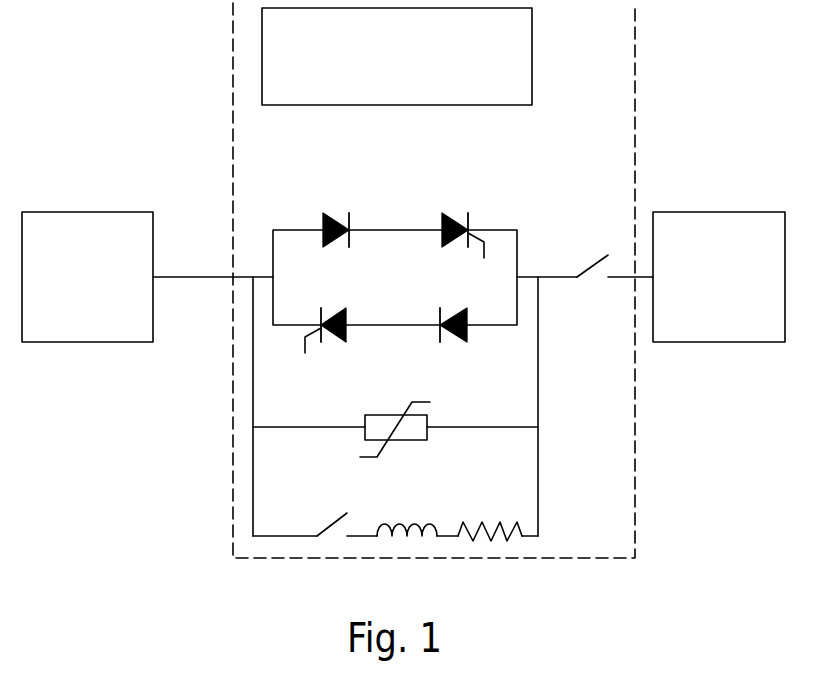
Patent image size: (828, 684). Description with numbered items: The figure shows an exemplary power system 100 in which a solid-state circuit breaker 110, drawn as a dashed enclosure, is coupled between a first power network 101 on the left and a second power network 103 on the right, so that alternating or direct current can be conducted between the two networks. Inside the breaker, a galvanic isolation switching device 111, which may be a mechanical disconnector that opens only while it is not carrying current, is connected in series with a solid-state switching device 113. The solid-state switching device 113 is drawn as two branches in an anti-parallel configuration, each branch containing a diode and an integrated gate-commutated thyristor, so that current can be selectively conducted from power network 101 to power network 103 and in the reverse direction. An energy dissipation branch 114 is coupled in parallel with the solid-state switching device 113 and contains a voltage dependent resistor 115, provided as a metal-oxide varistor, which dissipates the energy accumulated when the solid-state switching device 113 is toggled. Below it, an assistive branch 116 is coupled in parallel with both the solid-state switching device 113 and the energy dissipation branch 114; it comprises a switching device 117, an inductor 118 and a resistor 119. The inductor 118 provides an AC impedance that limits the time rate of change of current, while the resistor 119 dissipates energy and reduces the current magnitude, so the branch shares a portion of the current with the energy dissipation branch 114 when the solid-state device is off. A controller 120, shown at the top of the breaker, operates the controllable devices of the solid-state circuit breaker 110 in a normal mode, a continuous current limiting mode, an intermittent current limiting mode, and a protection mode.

The power system 100 is at (106, 82).
The power network 101 is at (86, 343).
The power network 103 is at (730, 343).
The solid-state circuit breaker 110 is at (636, 466).
The galvanic isolation switching device 111 is at (590, 262).
The solid-state switching device 113 is at (471, 210).
The energy dissipation branch 114 is at (395, 405).
The voltage dependent resistor 115 is at (365, 432).
The assistive branch 116 is at (395, 527).
The switching device 117 is at (320, 522).
The inductor 118 is at (410, 538).
The resistor 119 is at (510, 542).
The controller 120 is at (533, 29).